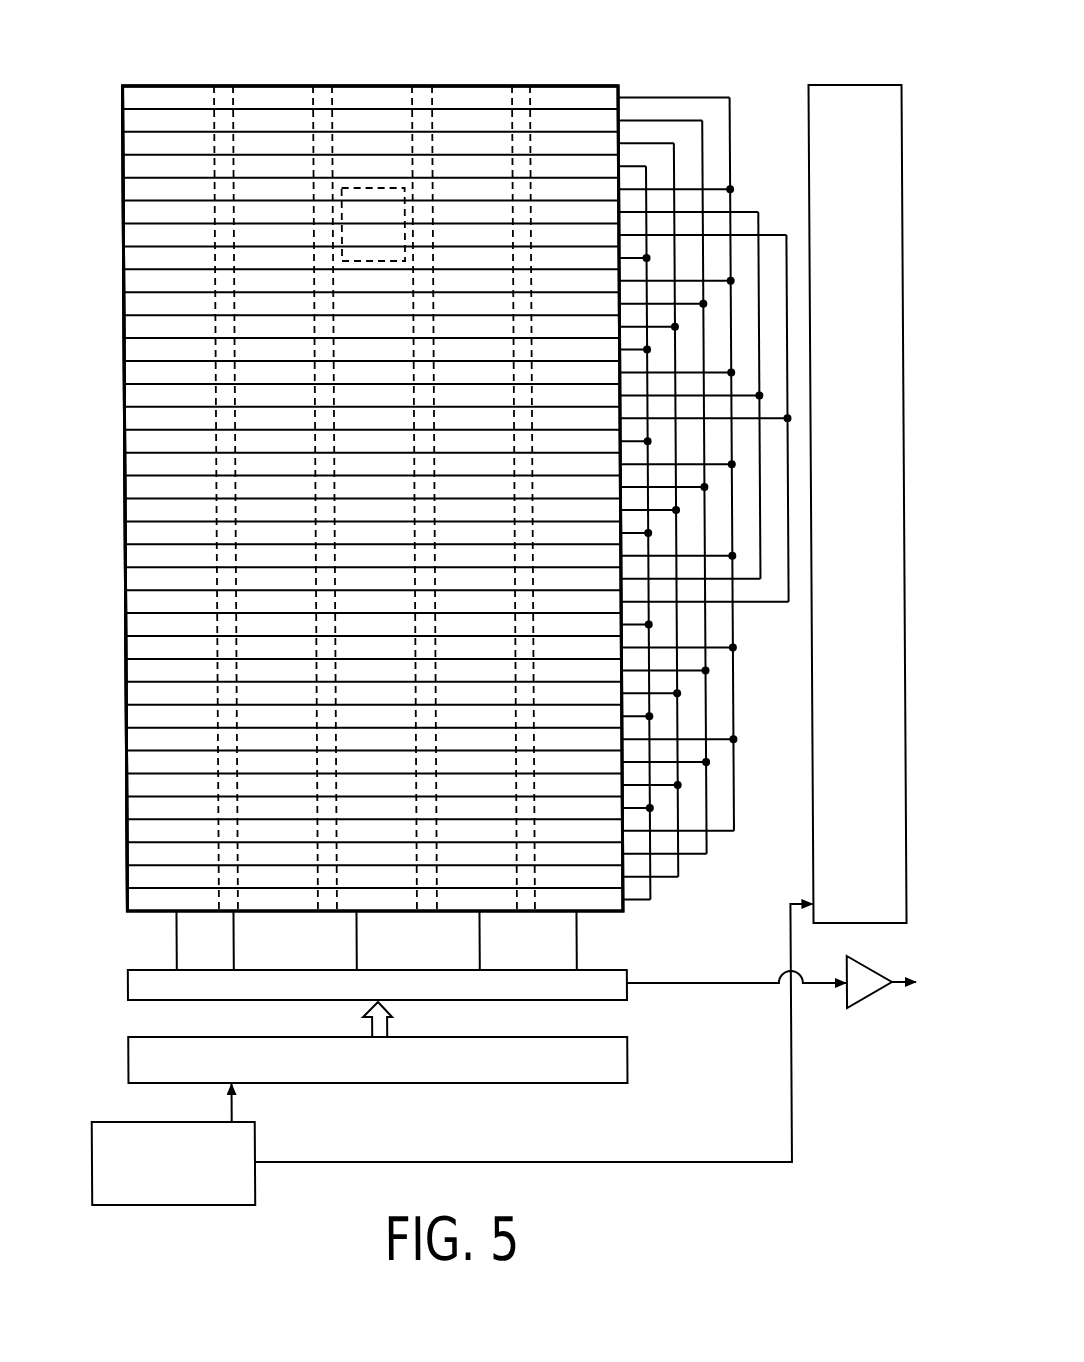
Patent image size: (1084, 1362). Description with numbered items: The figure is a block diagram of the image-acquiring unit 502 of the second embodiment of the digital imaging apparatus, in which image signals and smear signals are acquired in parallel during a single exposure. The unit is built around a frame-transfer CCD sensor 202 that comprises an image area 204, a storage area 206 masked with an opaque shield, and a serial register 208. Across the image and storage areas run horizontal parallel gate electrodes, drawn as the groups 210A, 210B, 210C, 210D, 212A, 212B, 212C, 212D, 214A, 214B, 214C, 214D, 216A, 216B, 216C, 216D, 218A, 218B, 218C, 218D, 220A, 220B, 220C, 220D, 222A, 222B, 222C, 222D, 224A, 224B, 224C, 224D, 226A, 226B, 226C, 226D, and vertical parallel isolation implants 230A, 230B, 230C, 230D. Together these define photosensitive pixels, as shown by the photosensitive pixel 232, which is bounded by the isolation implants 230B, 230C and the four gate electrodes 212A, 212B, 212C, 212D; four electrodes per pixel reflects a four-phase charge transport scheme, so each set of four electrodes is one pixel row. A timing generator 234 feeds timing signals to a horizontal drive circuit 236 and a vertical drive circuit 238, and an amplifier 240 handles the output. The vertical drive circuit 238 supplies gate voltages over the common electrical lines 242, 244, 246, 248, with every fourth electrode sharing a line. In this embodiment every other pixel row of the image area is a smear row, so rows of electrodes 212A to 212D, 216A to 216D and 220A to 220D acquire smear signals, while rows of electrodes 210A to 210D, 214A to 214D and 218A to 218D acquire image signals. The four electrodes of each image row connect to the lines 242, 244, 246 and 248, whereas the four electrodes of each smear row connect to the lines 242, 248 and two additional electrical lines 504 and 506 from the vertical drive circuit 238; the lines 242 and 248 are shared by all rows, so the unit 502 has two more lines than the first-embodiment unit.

The CCD sensor 202 is at (570, 46).
The image area 204 is at (159, 85).
The storage area 206 is at (125, 858).
The serial register 208 is at (125, 977).
The gate electrode 210A is at (599, 108).
The gate electrode 210B is at (599, 130).
The gate electrode 210C is at (599, 153).
The gate electrode 210D is at (599, 176).
The gate electrode 212A is at (599, 199).
The gate electrode 212B is at (599, 222).
The gate electrode 212C is at (599, 245).
The gate electrode 212D is at (599, 268).
The gate electrode 214A is at (599, 291).
The gate electrode 214B is at (599, 314).
The gate electrode 214C is at (599, 337).
The gate electrode 214D is at (599, 360).
The gate electrode 216A is at (599, 382).
The gate electrode 216B is at (599, 405).
The gate electrode 216C is at (599, 428).
The gate electrode 216D is at (599, 451).
The gate electrode 218A is at (599, 474).
The gate electrode 218B is at (599, 497).
The gate electrode 218C is at (599, 520).
The gate electrode 218D is at (599, 543).
The gate electrode 220A is at (599, 566).
The gate electrode 220B is at (599, 589).
The gate electrode 220C is at (599, 612).
The gate electrode 220D is at (599, 635).
The gate electrode 222A is at (599, 658).
The gate electrode 222B is at (599, 680).
The gate electrode 222C is at (599, 703).
The gate electrode 222D is at (599, 726).
The gate electrode 224A is at (599, 749).
The gate electrode 224B is at (599, 772).
The gate electrode 224C is at (599, 795).
The gate electrode 224D is at (599, 818).
The gate electrode 226A is at (599, 841).
The gate electrode 226B is at (599, 864).
The gate electrode 226C is at (599, 887).
The gate electrode 226D is at (599, 910).
The isolation implant 230A is at (217, 100).
The isolation implant 230B is at (316, 100).
The isolation implant 230C is at (415, 100).
The isolation implant 230D is at (515, 100).
The photosensitive pixel 232 is at (371, 188).
The timing generator 234 is at (223, 1205).
The horizontal drive circuit 236 is at (594, 1084).
The vertical drive circuit 238 is at (826, 83).
The amplifier 240 is at (854, 1006).
The electrical line 242 is at (724, 833).
The electrical line 244 is at (698, 856).
The electrical line 246 is at (664, 879).
The electrical line 248 is at (634, 902).
The image-acquiring unit 502 is at (97, 138).
The electrical line 504 is at (753, 580).
The electrical line 506 is at (782, 602).